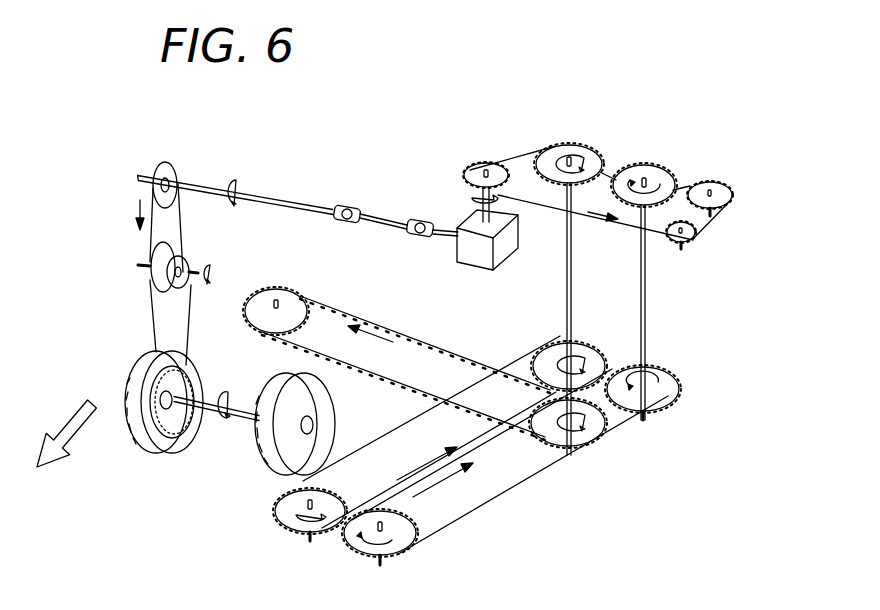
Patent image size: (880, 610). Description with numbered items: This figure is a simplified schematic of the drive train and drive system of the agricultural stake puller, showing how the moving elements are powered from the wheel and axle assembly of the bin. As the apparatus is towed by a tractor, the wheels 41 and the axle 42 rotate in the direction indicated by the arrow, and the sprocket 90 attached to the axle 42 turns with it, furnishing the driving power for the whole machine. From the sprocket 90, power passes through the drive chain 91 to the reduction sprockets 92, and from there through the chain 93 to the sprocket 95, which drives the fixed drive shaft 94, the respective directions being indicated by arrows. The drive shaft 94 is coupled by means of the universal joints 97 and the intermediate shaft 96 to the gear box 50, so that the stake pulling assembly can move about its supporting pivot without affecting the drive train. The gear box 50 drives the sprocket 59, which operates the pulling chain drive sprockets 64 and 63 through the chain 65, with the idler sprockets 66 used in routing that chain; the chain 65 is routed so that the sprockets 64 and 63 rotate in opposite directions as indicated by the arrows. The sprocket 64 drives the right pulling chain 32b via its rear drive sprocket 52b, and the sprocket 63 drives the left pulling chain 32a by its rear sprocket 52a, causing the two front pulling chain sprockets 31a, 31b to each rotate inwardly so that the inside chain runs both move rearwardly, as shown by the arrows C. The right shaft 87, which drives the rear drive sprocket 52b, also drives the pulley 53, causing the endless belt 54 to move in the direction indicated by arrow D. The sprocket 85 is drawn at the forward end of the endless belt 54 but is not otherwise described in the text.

The front pulling chain sprocket 31a is at (410, 529).
The front pulling chain sprocket 31b is at (284, 515).
The left pulling chain 32a is at (562, 467).
The right pulling chain 32b is at (388, 433).
The wheels 41 is at (137, 440).
The axle 42 is at (248, 407).
The gear box 50 is at (483, 267).
The rear sprocket 52a is at (670, 388).
The rear drive sprocket 52b is at (593, 355).
The pulley 53 is at (547, 435).
The endless belt 54 is at (457, 353).
The drive sprocket 59 is at (470, 173).
The sprocket 63 is at (637, 170).
The sprocket 64 is at (563, 148).
The chain 65 is at (627, 228).
The idler sprockets 66 is at (723, 206).
The sprocket 85 is at (282, 295).
The right shaft 87 is at (566, 283).
The sprocket 90 is at (195, 438).
The drive chain 91 is at (191, 310).
The reduction sprockets 92 is at (160, 284).
The chain 93 is at (177, 240).
The drive shaft 94 is at (295, 200).
The sprocket 95 is at (175, 172).
The shaft 96 is at (378, 225).
The universal joints 97 is at (410, 220).